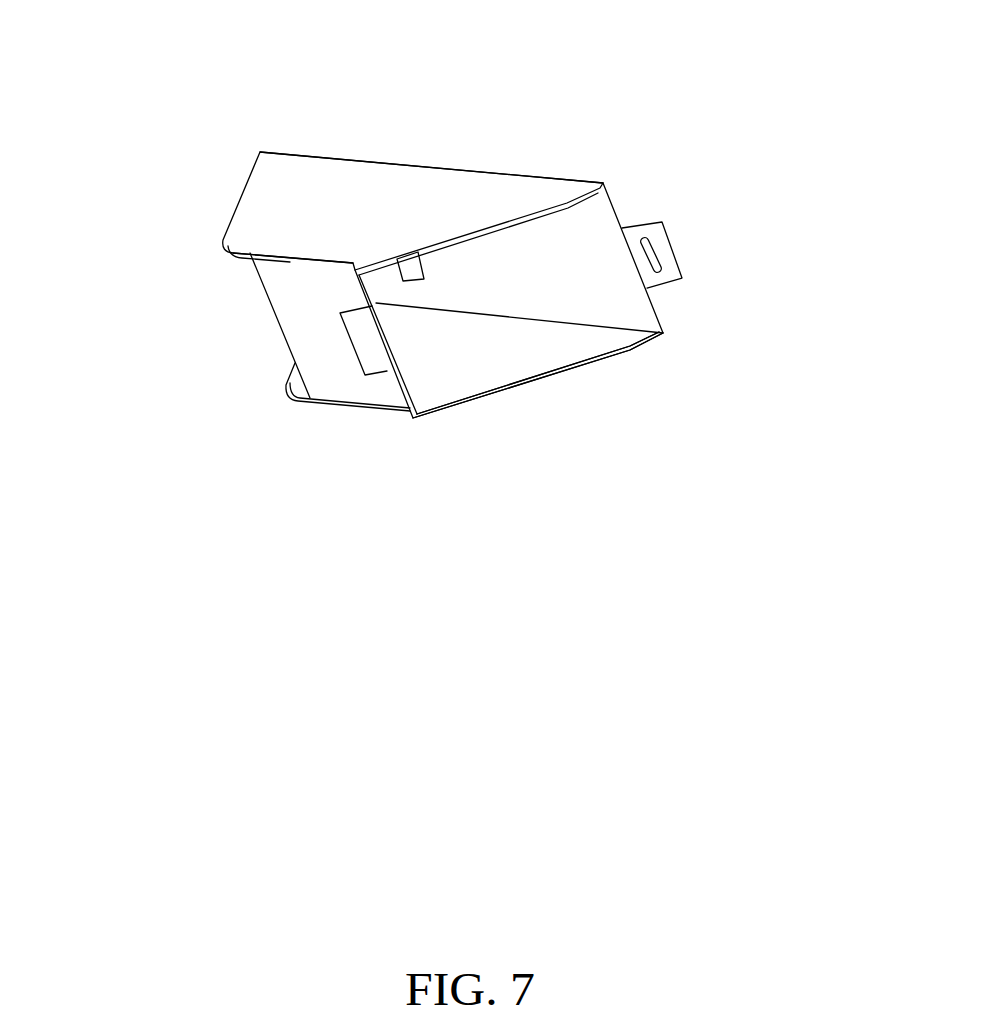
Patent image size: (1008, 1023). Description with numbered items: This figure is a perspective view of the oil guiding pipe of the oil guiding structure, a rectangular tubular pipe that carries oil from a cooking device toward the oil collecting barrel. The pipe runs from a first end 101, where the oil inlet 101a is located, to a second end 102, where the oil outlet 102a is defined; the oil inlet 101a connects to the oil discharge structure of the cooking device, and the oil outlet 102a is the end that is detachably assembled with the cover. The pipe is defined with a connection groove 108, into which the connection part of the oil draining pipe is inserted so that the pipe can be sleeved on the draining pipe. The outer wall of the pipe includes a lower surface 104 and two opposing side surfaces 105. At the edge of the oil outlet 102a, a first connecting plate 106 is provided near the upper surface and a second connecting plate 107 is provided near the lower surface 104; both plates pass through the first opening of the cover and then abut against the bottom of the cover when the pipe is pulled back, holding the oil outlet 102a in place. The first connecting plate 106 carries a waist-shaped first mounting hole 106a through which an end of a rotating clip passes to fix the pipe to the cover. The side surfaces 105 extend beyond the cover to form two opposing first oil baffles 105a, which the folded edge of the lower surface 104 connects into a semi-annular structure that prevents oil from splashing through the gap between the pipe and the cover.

The first end 101 is at (215, 194).
The oil inlet 101a is at (268, 355).
The second end 102 is at (620, 173).
The oil outlet 102a is at (537, 305).
The lower surface 104 is at (312, 403).
The side surface 105 is at (310, 182).
The first oil baffle 105a is at (510, 413).
The first connecting plate 106 is at (670, 205).
The first mounting hole 106a is at (682, 259).
The second connecting plate 107 is at (377, 378).
The connection groove 108 is at (416, 238).